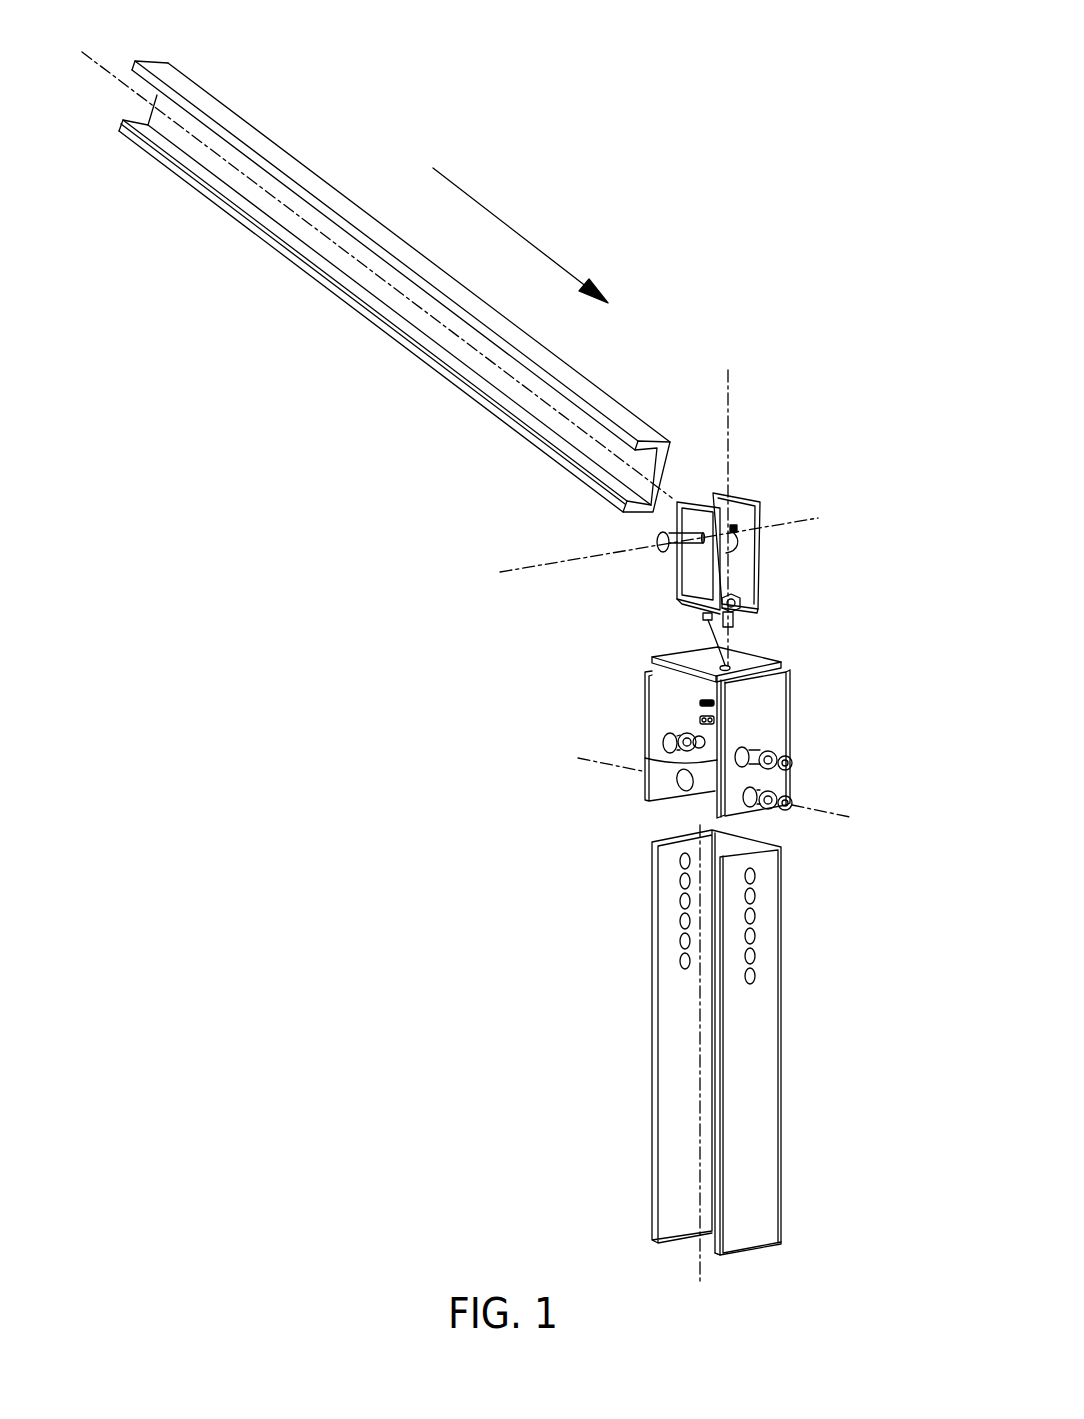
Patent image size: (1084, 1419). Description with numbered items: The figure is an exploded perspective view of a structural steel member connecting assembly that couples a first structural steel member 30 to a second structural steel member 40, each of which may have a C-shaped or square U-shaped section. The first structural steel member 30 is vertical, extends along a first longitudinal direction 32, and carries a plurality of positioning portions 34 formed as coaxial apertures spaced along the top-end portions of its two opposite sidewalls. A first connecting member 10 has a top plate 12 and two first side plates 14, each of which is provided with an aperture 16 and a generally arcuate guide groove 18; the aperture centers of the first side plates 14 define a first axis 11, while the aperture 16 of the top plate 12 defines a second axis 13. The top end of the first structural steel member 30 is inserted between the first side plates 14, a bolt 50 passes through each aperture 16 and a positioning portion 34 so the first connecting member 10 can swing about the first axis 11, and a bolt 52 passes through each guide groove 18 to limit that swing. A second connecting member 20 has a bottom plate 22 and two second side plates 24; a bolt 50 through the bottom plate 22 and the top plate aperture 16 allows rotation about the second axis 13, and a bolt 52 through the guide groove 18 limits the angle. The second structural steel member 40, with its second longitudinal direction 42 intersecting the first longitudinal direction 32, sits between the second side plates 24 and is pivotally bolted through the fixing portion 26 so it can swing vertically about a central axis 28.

The first connecting member 10 is at (733, 716).
The first axis 11 is at (832, 818).
The top plate 12 is at (760, 656).
The second axis 13 is at (735, 382).
The first side plates 14 is at (645, 697).
The aperture 16 is at (703, 619).
The guide groove 18 is at (715, 673).
The second connecting member 20 is at (784, 511).
The bottom plate 22 is at (757, 613).
The second side plates 24 is at (700, 500).
The fixing portion 26 is at (700, 552).
The central axis 28 is at (530, 568).
The first structural steel member 30 is at (760, 1060).
The first longitudinal direction 32 is at (700, 1267).
The positioning portions 34 is at (758, 916).
The second structural steel member 40 is at (272, 255).
The second longitudinal direction 42 is at (113, 75).
The bolt 50 is at (655, 539).
The bolt 52 is at (724, 666).